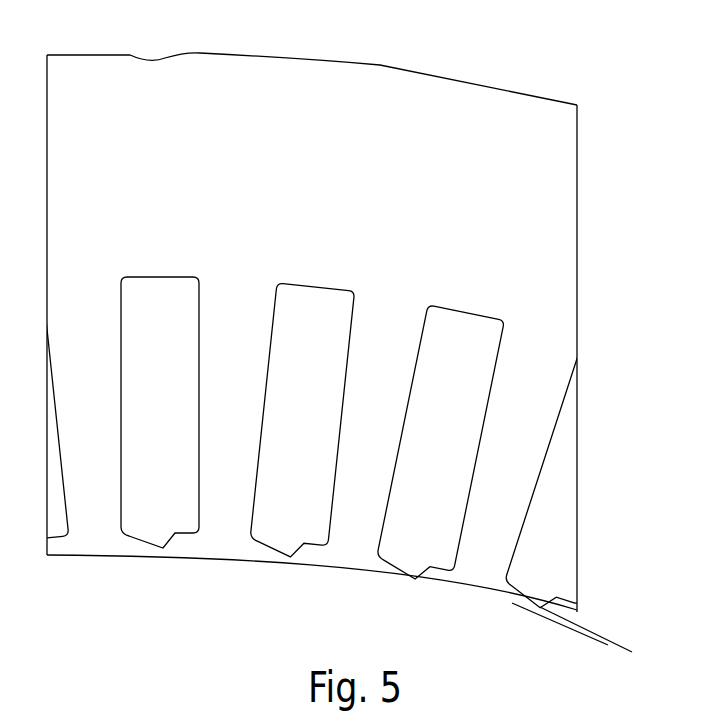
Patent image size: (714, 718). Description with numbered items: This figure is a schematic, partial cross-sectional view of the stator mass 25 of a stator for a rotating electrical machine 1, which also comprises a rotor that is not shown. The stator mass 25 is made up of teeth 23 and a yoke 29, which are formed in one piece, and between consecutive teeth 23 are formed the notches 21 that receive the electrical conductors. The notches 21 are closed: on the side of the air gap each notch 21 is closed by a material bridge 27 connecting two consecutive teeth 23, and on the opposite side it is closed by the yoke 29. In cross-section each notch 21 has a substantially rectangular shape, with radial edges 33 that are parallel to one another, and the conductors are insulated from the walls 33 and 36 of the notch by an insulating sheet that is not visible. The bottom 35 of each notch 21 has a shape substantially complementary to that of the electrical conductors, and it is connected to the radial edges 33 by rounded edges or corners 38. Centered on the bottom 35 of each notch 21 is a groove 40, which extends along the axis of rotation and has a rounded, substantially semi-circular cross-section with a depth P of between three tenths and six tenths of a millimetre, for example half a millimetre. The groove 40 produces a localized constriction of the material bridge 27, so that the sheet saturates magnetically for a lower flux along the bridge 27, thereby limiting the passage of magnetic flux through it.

The rotating electrical machine 1 is at (570, 640).
The depth of groove P is at (594, 636).
The notch 21 is at (329, 448).
The tooth 23 is at (305, 393).
The stator mass 25 is at (383, 63).
The material bridge 27 is at (303, 558).
The yoke 29 is at (312, 333).
The radial edge 33 is at (202, 312).
The bottom of notch 35 is at (165, 546).
The wall of notch 36 is at (155, 274).
The rounded edge 38 is at (123, 533).
The groove 40 is at (175, 532).